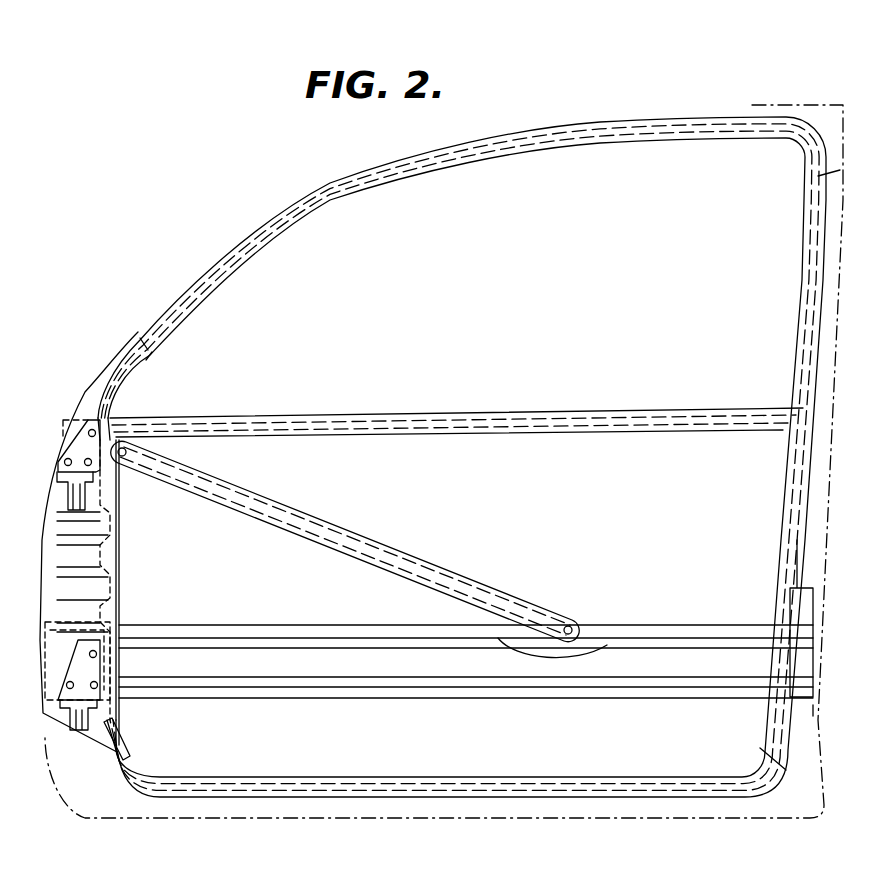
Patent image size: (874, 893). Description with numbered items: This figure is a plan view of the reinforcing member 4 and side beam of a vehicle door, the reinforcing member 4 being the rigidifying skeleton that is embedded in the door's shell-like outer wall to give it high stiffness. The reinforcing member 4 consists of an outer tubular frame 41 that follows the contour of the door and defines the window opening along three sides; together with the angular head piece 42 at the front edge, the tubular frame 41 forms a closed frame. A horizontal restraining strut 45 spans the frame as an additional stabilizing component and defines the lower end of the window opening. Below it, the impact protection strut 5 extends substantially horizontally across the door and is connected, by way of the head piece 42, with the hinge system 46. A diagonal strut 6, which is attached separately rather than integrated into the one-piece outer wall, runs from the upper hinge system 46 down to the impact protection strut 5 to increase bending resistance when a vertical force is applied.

The reinforcing member 4 is at (815, 286).
The outer tubular frame 41 is at (815, 482).
The angular head piece 42 is at (98, 583).
The horizontal restraining strut 45 is at (597, 427).
The hinge system 46 is at (76, 452).
The impact protection strut 5 is at (385, 665).
The diagonal strut 6 is at (418, 577).